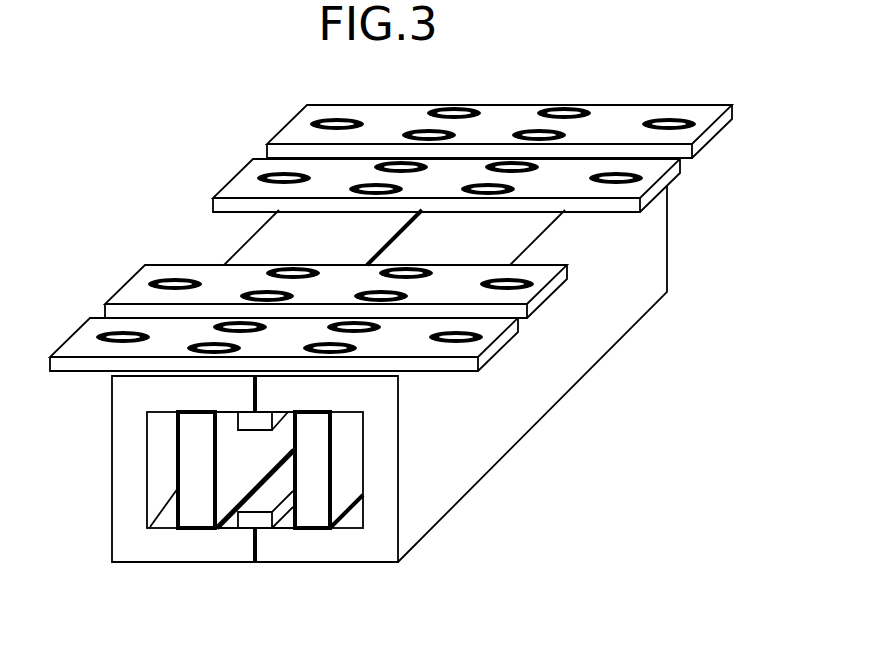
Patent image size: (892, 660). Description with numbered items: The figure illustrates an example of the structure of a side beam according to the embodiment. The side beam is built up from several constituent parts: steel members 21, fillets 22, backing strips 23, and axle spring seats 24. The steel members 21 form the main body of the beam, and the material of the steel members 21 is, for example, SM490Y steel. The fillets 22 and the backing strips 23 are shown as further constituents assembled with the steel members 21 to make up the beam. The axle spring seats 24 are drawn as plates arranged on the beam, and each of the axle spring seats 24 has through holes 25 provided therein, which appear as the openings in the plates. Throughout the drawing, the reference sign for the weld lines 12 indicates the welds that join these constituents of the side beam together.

The weld lines 12 is at (420, 215).
The steel members 21 is at (251, 238).
The fillets 22 is at (178, 487).
The backing strips 23 is at (253, 430).
The axle spring seats 24 is at (286, 122).
The through holes 25 is at (365, 318).